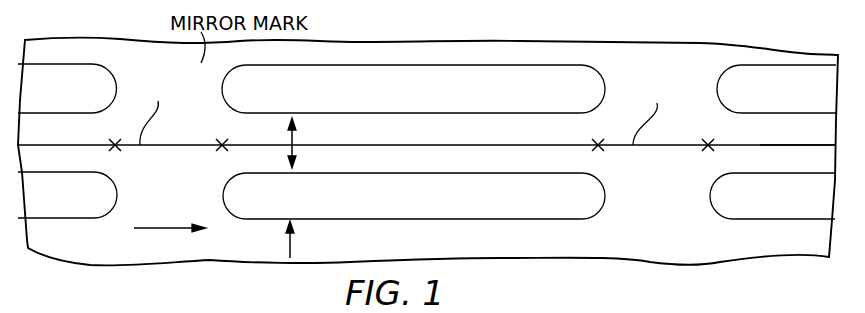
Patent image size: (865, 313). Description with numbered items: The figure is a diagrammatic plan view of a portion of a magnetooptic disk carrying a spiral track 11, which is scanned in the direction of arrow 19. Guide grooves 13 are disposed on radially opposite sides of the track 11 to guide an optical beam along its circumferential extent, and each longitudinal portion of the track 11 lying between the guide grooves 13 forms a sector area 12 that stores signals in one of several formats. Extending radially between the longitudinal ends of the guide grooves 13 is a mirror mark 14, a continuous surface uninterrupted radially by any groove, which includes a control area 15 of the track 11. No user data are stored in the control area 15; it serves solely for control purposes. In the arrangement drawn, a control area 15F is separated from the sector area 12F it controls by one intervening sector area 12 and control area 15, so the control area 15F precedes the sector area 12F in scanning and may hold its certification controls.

The spiral track 11 is at (293, 149).
The sector area 12 is at (401, 147).
The sector area 12F is at (789, 148).
The guide grooves 13 is at (80, 101).
The mirror mark 14 is at (180, 73).
The control area 15 is at (173, 146).
The control area 15F is at (181, 145).
The arrow 19 is at (135, 230).